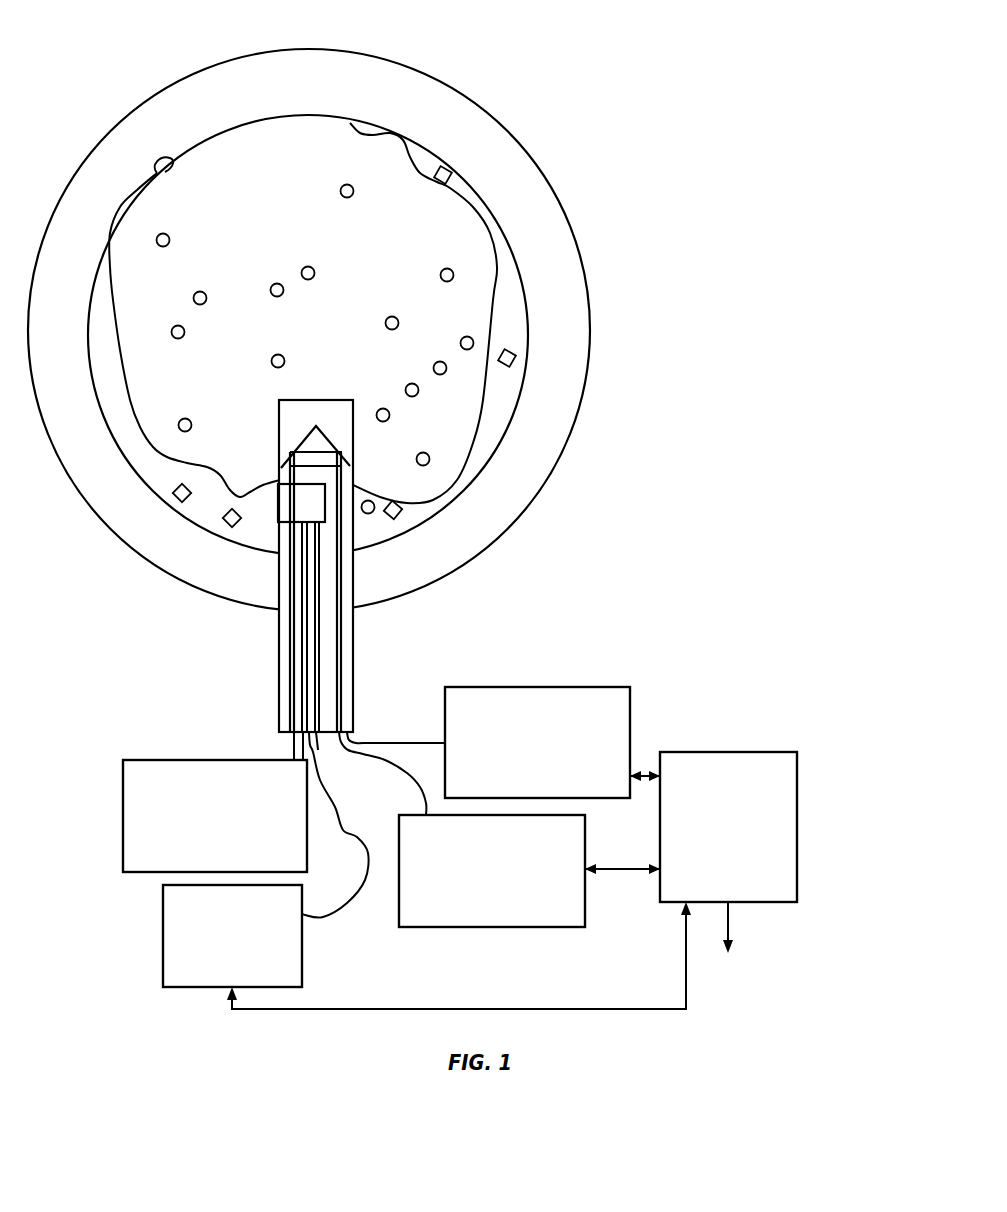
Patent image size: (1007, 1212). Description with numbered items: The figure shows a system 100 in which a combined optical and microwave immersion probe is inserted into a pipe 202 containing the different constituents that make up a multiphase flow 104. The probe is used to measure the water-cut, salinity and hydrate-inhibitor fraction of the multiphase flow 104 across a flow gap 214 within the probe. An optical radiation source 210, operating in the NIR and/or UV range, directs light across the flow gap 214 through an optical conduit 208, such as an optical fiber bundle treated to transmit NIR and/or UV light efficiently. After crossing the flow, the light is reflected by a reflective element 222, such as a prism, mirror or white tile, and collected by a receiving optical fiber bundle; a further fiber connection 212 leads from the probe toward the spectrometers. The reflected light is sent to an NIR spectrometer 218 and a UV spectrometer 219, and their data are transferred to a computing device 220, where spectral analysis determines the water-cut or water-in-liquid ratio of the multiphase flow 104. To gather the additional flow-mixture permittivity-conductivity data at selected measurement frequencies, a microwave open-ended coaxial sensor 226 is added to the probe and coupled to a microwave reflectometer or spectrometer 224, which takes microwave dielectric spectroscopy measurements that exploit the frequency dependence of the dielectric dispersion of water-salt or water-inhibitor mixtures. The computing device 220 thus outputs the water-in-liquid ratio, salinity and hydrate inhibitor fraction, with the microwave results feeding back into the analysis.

The system 100 is at (510, 43).
The multiphase flow 104 is at (307, 329).
The pipe 202 is at (575, 247).
The optical conduit 208 is at (290, 748).
The optical radiation source 210 is at (232, 836).
The fiber optic cable to spectrometer 212 is at (366, 743).
The flow gap 214 is at (283, 522).
The NIR spectrometer 218 is at (509, 892).
The UV spectrometer 219 is at (554, 767).
The computing device 220 is at (744, 861).
The reflective element 222 is at (353, 438).
The microwave reflectometer or spectrometer 224 is at (245, 973).
The microwave open-ended coaxial sensor 226 is at (320, 628).